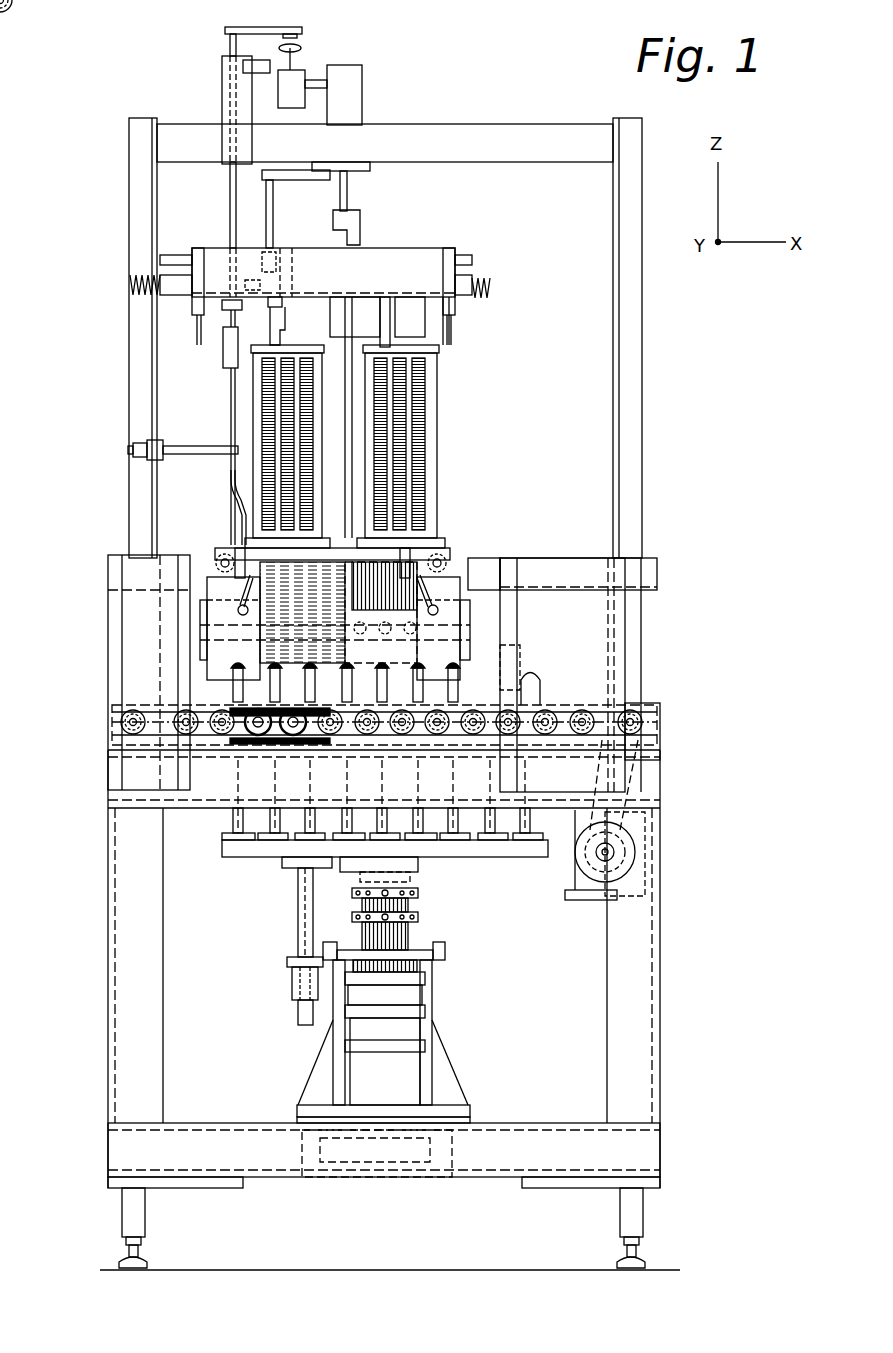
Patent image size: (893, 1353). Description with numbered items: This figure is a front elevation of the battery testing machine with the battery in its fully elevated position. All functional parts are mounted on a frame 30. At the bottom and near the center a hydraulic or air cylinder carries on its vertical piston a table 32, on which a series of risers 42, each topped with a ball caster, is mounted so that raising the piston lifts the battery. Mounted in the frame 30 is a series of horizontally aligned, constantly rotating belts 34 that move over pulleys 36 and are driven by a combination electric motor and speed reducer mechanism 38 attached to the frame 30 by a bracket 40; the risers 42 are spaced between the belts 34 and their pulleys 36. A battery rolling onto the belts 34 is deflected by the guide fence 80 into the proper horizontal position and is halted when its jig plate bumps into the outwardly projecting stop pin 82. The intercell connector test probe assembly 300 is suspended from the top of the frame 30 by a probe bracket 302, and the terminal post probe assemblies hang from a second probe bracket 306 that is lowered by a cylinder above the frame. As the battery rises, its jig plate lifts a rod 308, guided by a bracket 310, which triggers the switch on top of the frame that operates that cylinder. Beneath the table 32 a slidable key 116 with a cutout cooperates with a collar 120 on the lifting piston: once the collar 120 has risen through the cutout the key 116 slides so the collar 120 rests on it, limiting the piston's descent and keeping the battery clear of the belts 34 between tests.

The frame 30 is at (146, 214).
The probe bracket 306 is at (247, 372).
The bracket 310 is at (195, 446).
The rod 308 is at (230, 495).
The probe bracket 302 is at (437, 402).
The intercell connector test probe assembly 300 is at (405, 556).
The stop pin 82 is at (440, 566).
The guide fence 80 is at (108, 568).
The risers 42 is at (470, 668).
The belts 34 is at (543, 712).
The pulleys 36 is at (293, 740).
The table 32 is at (260, 858).
The combination electric motor and speed reducer mechanism 38 is at (585, 856).
The bracket 40 is at (586, 900).
The collar 120 is at (413, 915).
The slidable key 116 is at (415, 948).